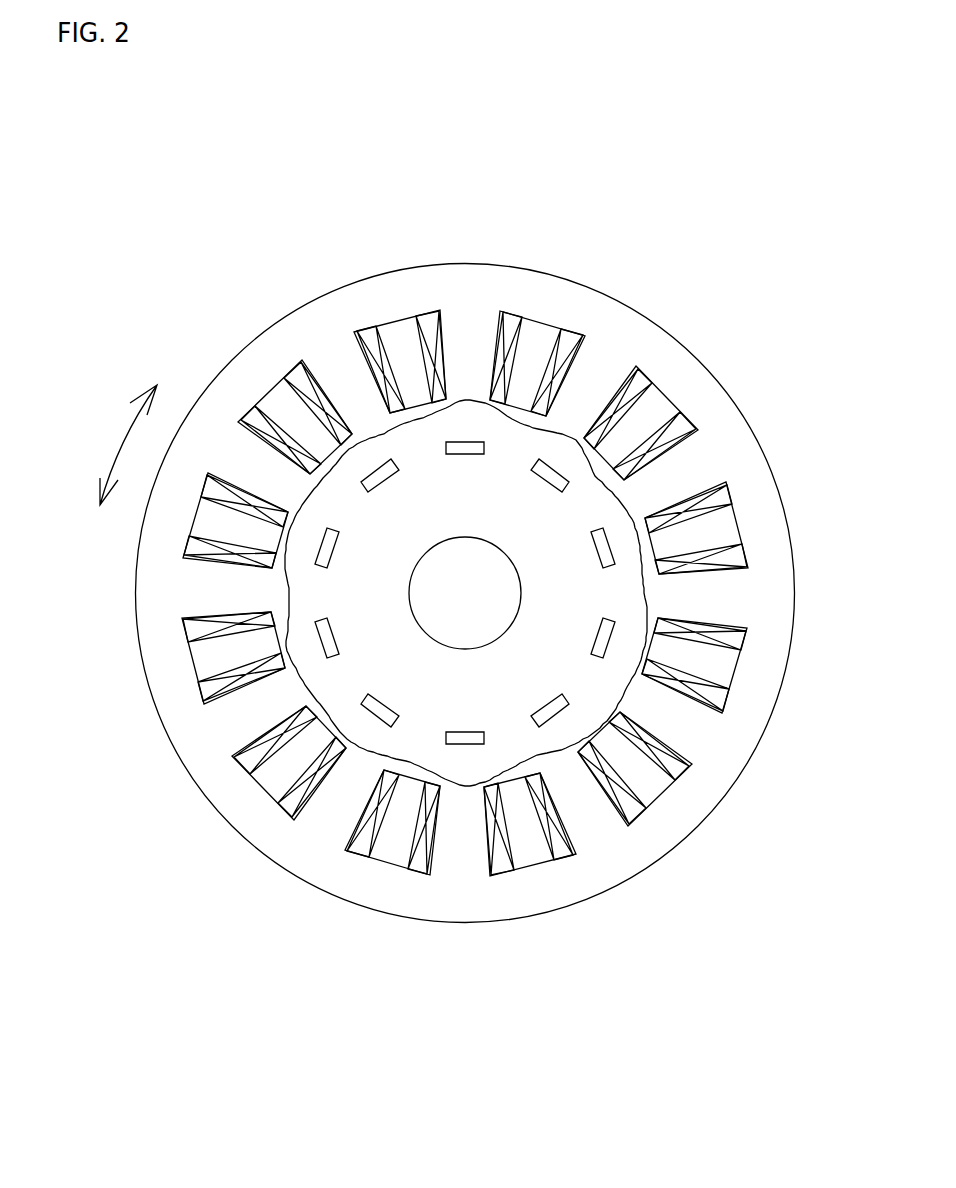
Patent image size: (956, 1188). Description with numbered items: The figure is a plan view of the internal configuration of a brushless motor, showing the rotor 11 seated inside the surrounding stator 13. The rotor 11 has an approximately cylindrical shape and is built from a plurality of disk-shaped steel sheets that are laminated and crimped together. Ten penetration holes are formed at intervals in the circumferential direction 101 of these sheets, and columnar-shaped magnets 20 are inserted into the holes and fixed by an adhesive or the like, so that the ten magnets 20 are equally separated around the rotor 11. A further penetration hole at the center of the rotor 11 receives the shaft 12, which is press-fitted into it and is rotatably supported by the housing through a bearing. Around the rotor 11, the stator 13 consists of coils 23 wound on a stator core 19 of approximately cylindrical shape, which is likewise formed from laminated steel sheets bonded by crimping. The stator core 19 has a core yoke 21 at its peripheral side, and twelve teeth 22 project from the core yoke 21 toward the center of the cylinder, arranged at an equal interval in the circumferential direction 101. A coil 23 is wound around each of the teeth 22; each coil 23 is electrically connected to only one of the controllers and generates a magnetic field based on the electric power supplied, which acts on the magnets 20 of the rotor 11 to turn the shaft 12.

The rotor 11 is at (530, 401).
The shaft 12 is at (520, 575).
The stator 13 is at (262, 925).
The stator core 19 is at (465, 264).
The magnet 20 is at (598, 537).
The core yoke 21 is at (385, 298).
The teeth 22 is at (347, 383).
The coil 23 is at (305, 418).
The circumferential direction 101 is at (127, 447).